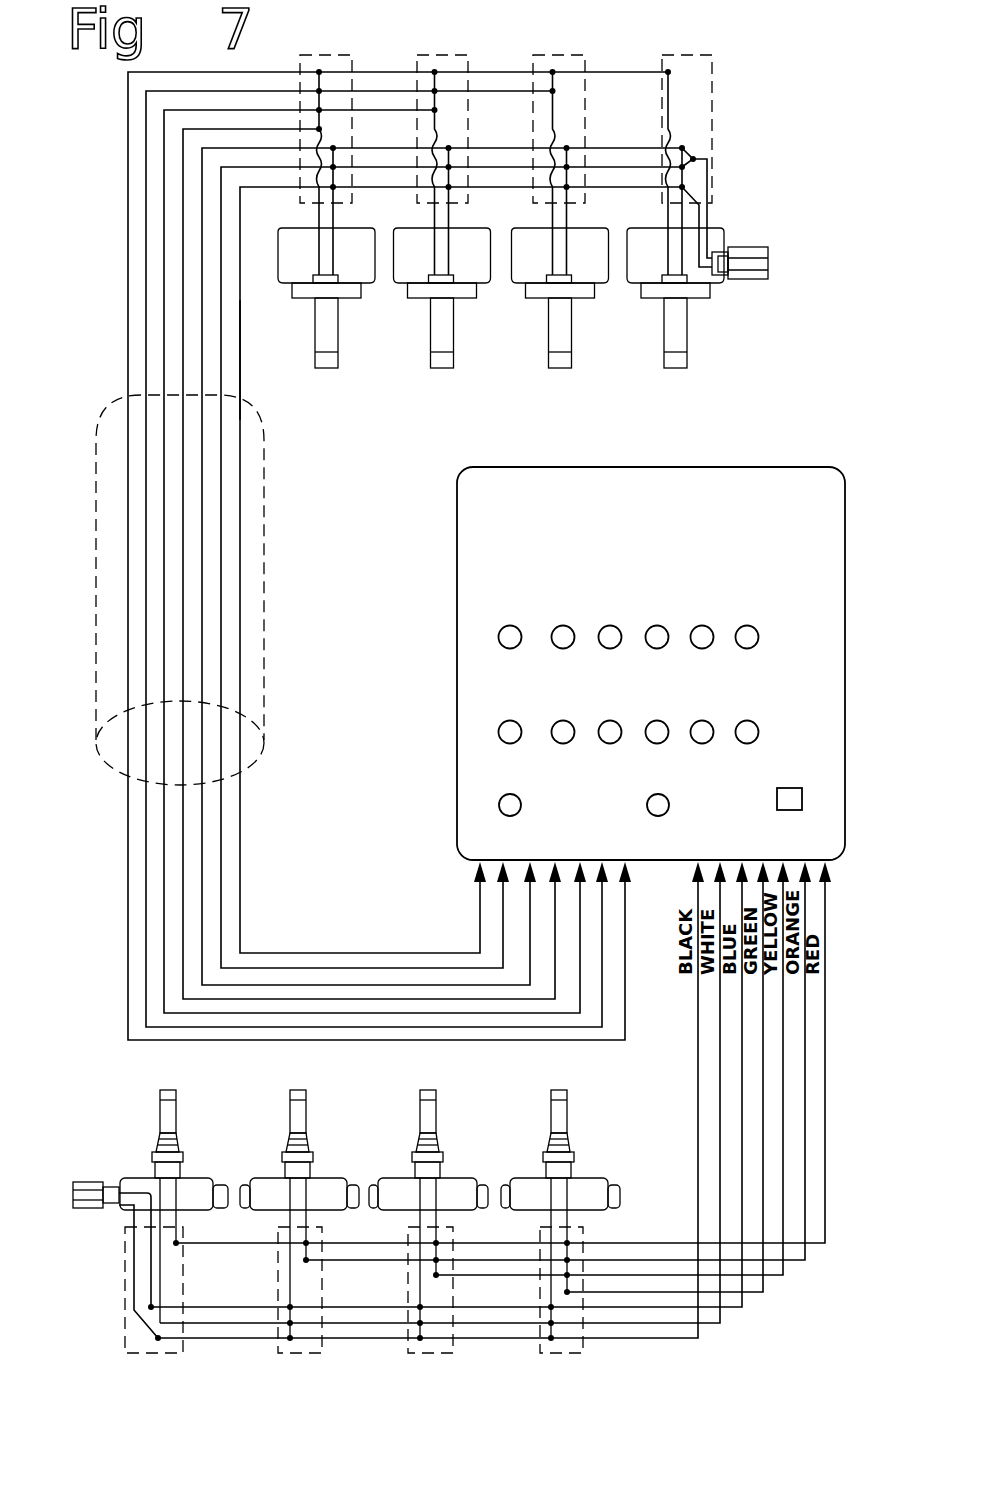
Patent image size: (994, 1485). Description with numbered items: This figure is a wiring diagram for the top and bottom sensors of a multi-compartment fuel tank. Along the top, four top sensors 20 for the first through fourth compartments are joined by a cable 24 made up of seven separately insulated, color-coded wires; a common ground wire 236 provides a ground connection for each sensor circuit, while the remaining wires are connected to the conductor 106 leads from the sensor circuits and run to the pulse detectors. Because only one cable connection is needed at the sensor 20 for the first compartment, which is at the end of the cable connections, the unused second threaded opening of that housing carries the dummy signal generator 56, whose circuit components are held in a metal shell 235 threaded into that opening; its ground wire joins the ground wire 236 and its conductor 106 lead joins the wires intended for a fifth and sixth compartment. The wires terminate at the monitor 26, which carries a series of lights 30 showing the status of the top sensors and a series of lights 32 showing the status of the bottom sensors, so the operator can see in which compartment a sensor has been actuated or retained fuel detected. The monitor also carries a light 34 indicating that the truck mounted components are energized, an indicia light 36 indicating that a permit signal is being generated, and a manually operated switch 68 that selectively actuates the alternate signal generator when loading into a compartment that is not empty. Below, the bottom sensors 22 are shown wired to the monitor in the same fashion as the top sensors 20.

The top sensor 20 is at (338, 343).
The bottom sensor 22 is at (176, 1107).
The cable 24 is at (266, 558).
The monitor 26 is at (624, 663).
The series of lights 30 is at (742, 626).
The series of lights 32 is at (554, 740).
The light 34 is at (519, 797).
The indicia light 36 is at (667, 797).
The dummy signal generator 56 is at (779, 248).
The manually operated switch 68 is at (802, 790).
The conductor 106 is at (318, 240).
The metal shell 235 is at (741, 280).
The common ground wire 236 is at (241, 372).